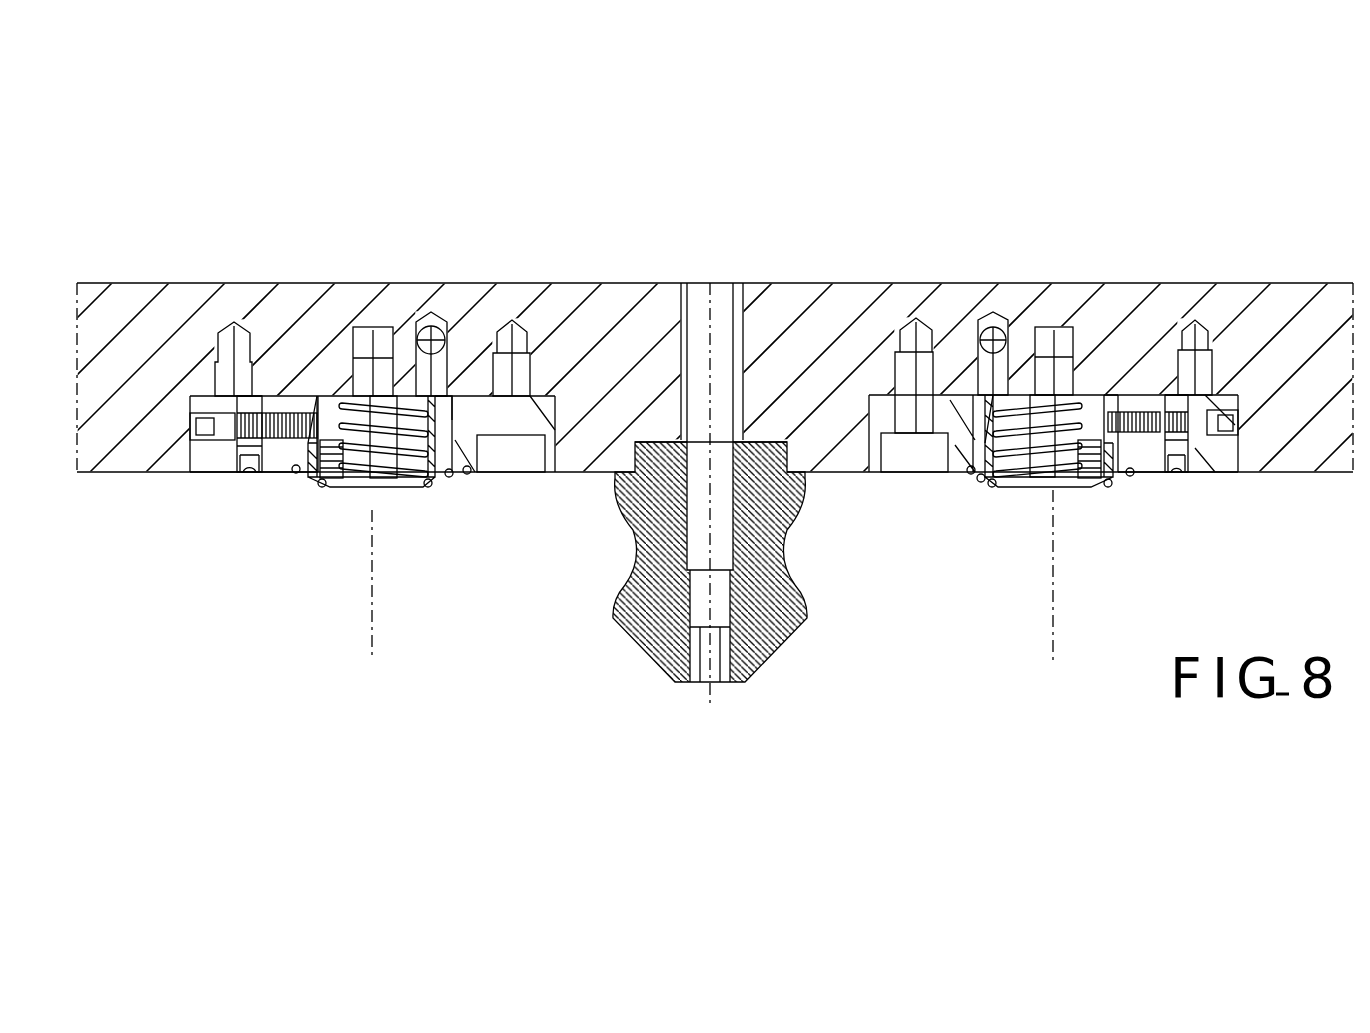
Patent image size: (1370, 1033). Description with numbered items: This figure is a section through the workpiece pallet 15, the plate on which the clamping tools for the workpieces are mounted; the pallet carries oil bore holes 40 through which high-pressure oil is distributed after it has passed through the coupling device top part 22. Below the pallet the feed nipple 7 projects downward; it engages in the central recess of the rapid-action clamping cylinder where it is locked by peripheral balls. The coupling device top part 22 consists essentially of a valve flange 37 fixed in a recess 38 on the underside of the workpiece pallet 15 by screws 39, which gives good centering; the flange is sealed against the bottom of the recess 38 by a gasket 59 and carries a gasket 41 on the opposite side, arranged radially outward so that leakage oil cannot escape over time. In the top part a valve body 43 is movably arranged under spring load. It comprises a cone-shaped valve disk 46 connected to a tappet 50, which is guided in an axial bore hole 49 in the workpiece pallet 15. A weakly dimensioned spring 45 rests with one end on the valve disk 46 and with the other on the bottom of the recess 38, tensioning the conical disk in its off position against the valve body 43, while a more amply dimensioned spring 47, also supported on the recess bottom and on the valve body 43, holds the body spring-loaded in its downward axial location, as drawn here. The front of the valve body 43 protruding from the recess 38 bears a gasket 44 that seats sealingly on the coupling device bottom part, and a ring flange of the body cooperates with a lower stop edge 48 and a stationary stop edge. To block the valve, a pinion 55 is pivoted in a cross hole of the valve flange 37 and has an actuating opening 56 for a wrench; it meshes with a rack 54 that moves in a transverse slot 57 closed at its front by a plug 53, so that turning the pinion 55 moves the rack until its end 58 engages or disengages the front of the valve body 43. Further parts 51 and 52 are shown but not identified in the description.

The feed nipple 7 is at (775, 600).
The workpiece pallet 15 is at (297, 295).
The coupling device top part 22 is at (472, 140).
The valve flange 37 is at (218, 476).
The recess 38 is at (183, 476).
The screws 39 is at (231, 343).
The oil bore holes 40 is at (450, 395).
The gasket 41 is at (293, 476).
The valve body 43 is at (302, 490).
The gasket 44 is at (422, 492).
The weakly dimensioned spring 45 is at (336, 398).
The cone-shaped valve disk 46 is at (388, 490).
The more amply dimensioned spring 47 is at (375, 490).
The lower stop edge 48 is at (468, 476).
The axial bore hole 49 is at (372, 385).
The tappet 50 is at (375, 400).
The seal ring 51 is at (449, 478).
The housing 52 is at (183, 351).
The plug 53 is at (150, 476).
The rack 54 is at (280, 405).
The pinion 55 is at (270, 412).
The actuating opening 56 is at (252, 476).
The transverse slot 57 is at (333, 395).
The end of the rack 58 is at (326, 345).
The gasket 59 is at (466, 390).